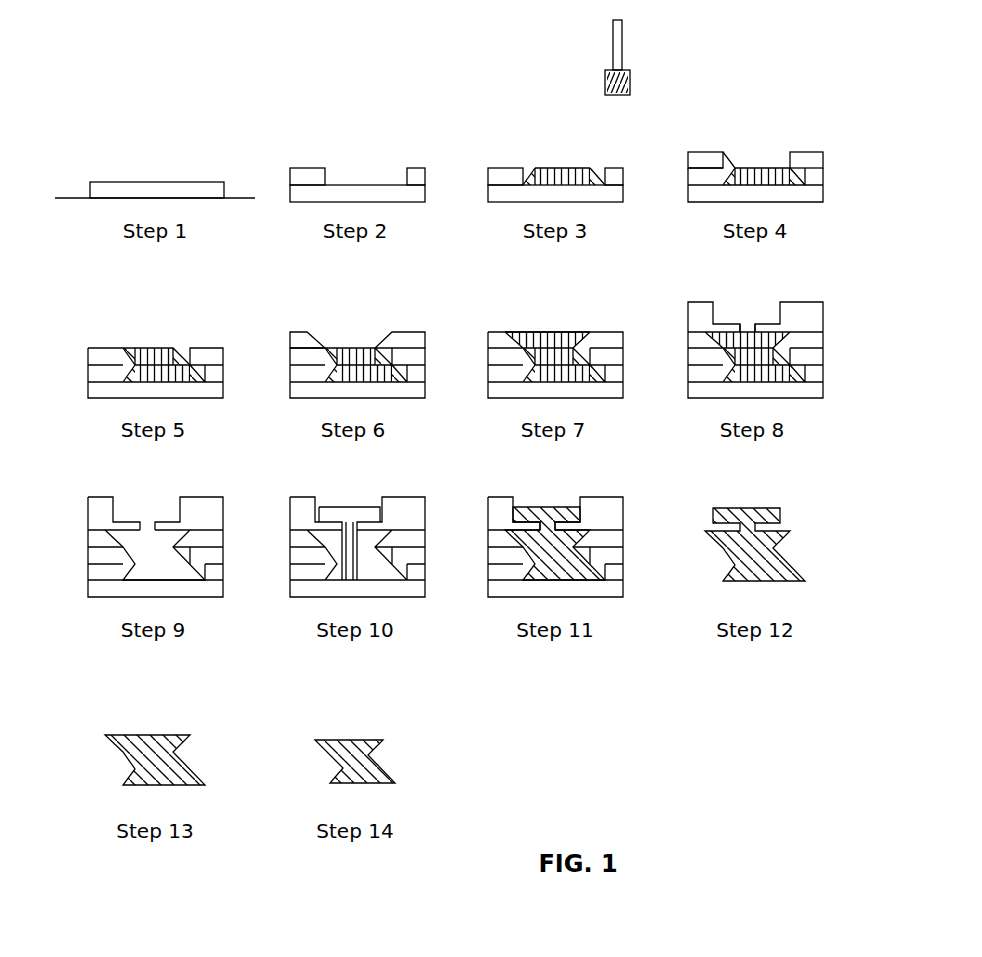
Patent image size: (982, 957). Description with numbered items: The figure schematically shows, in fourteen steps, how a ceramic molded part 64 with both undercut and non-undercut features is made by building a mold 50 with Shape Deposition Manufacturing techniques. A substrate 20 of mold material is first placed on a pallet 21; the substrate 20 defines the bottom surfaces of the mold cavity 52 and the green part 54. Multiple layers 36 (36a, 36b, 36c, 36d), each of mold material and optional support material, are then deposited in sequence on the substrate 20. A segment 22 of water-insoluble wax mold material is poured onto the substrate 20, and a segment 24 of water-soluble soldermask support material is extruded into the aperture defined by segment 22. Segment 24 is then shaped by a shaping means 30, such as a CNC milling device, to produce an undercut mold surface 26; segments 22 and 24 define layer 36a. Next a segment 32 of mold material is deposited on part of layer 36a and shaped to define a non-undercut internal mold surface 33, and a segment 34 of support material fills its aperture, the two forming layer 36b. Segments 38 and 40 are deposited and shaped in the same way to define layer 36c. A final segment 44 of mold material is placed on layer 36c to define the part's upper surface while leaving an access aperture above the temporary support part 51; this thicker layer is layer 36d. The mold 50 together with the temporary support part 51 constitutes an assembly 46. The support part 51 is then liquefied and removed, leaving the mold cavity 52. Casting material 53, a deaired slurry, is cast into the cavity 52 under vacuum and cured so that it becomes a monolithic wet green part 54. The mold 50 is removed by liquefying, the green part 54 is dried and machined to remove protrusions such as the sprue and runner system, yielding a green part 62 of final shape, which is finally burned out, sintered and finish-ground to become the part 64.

The substrate 20 is at (208, 182).
The pallet 21 is at (75, 198).
The segment of mold material 22 is at (305, 168).
The segment of support material 24 is at (572, 172).
The mold surface 26 is at (532, 178).
The shaping means 30 is at (612, 44).
The segment of mold material 32 is at (700, 152).
The non-undercut internal mold surface 33 is at (730, 163).
The segment of support material 34 is at (162, 348).
The layers 36 is at (137, 347).
The first layer 36a is at (578, 155).
The second layer 36b is at (174, 347).
The third layer 36c is at (577, 345).
The final layer 36d is at (786, 330).
The segment 38 is at (302, 332).
The segment 40 is at (547, 332).
The final segment of mold material 44 is at (713, 317).
The assembly 46 is at (786, 362).
The mold 50 is at (128, 529).
The temporary support part 51 is at (747, 333).
The mold cavity 52 is at (150, 545).
The casting material 53 is at (348, 507).
The green part 54 is at (547, 507).
The green part of final shape 62 is at (147, 735).
The molded part 64 is at (352, 740).